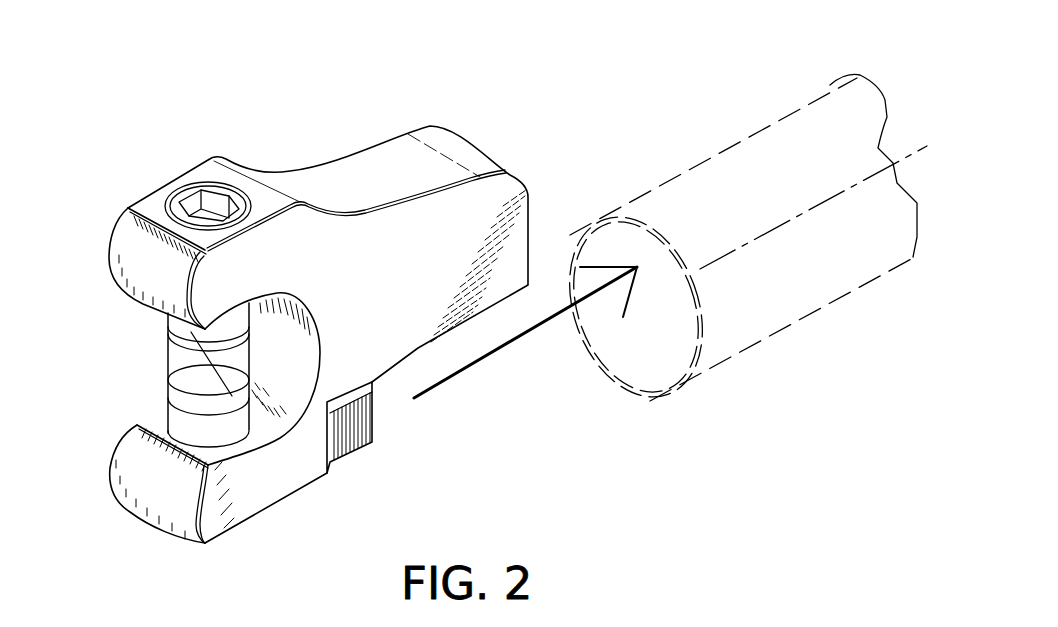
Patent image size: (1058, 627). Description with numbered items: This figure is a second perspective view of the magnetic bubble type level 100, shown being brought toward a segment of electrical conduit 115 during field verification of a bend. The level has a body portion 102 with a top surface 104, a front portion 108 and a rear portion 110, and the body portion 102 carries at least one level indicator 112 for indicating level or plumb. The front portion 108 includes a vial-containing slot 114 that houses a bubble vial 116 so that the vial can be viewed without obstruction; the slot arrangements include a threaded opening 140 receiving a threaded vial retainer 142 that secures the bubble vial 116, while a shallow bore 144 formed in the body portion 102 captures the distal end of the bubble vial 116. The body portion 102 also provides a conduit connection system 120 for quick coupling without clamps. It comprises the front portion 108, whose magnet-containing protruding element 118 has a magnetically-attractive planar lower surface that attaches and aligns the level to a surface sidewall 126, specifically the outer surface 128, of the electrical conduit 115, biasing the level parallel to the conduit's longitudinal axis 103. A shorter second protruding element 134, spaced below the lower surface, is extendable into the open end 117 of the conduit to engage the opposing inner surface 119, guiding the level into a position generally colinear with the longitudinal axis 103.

The magnetic bubble type level 100 is at (136, 119).
The body portion 102 is at (349, 106).
The longitudinal axis 103 is at (774, 229).
The top surface 104 is at (172, 195).
The front portion 108 is at (463, 153).
The rear portion 110 is at (150, 493).
The level indicator 112 is at (133, 363).
The vial-containing slot 114 is at (166, 404).
The electrical conduit 115 is at (798, 322).
The bubble vial 116 is at (168, 338).
The open end 117 is at (640, 366).
The protruding element 118 is at (530, 223).
The inner surface 119 is at (615, 368).
The conduit connection system 120 is at (490, 427).
The surface sidewall 126 is at (707, 163).
The outer surface 128 is at (760, 160).
The second protruding element 134 is at (361, 446).
The threaded opening 140 is at (157, 192).
The threaded vial retainer 142 is at (203, 192).
The shallow bore 144 is at (166, 418).